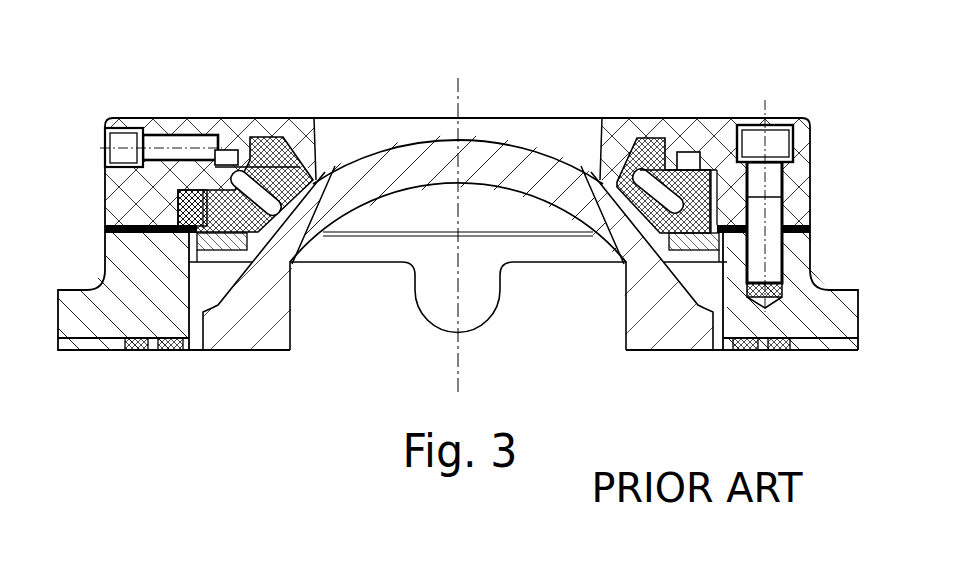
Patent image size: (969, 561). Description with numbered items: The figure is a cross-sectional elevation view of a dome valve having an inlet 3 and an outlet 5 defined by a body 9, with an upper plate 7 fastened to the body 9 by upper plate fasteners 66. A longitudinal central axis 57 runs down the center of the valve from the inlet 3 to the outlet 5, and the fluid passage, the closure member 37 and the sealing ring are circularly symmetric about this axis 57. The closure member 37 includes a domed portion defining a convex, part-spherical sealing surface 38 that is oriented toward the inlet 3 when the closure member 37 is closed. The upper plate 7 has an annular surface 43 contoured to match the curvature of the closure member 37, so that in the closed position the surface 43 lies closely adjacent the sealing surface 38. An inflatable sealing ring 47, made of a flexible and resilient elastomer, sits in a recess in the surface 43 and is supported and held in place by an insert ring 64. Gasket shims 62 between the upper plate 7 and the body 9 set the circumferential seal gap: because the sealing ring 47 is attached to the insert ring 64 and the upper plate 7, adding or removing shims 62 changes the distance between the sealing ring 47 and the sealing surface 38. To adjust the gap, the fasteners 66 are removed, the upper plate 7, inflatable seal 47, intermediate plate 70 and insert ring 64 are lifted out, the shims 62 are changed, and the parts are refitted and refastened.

The inlet 3 is at (557, 143).
The outlet 5 is at (578, 320).
The upper plate 7 is at (810, 177).
The body 9 is at (833, 312).
The closure member 37 is at (372, 172).
The sealing surface 38 is at (437, 136).
The annular surface 43 is at (281, 136).
The inflatable sealing ring 47 is at (212, 162).
The longitudinal central axis 57 is at (461, 116).
The gasket shims 62 is at (105, 228).
The insert ring 64 is at (690, 150).
The upper plate fasteners 66 is at (780, 147).
The intermediate plate 70 is at (168, 210).